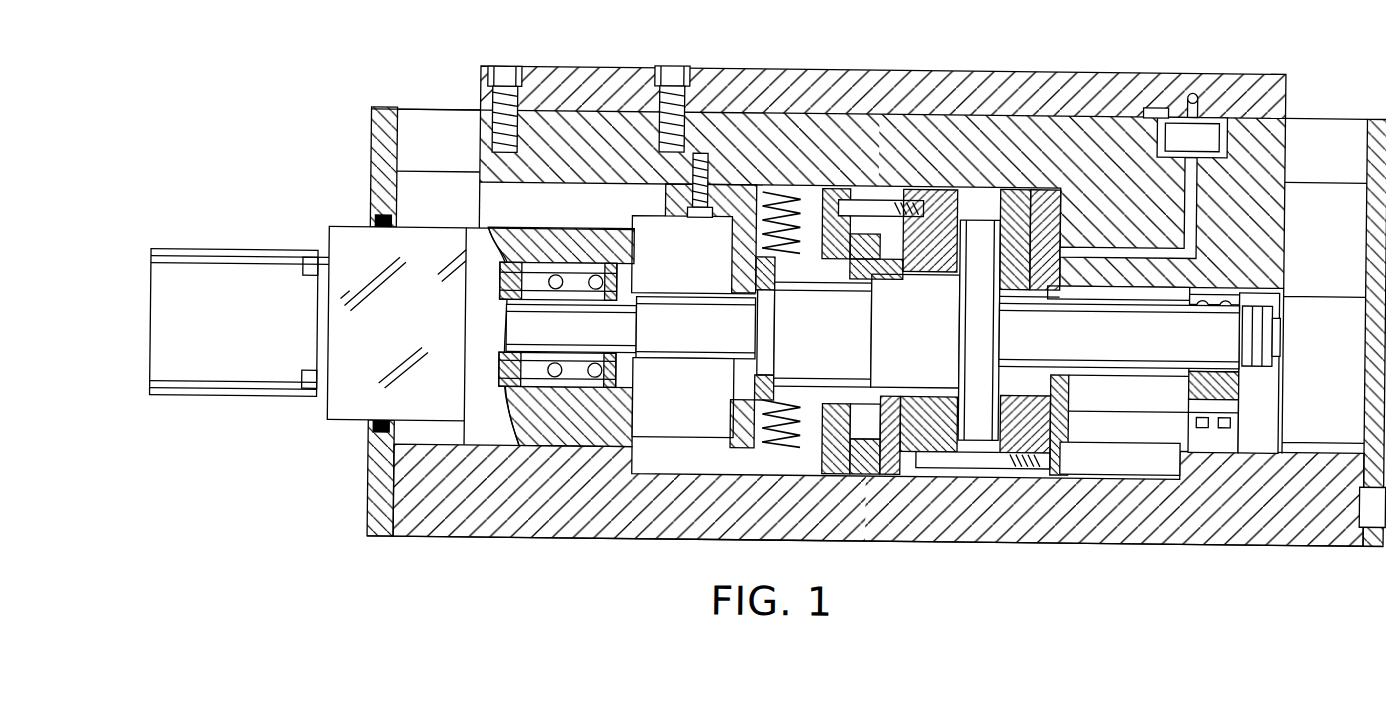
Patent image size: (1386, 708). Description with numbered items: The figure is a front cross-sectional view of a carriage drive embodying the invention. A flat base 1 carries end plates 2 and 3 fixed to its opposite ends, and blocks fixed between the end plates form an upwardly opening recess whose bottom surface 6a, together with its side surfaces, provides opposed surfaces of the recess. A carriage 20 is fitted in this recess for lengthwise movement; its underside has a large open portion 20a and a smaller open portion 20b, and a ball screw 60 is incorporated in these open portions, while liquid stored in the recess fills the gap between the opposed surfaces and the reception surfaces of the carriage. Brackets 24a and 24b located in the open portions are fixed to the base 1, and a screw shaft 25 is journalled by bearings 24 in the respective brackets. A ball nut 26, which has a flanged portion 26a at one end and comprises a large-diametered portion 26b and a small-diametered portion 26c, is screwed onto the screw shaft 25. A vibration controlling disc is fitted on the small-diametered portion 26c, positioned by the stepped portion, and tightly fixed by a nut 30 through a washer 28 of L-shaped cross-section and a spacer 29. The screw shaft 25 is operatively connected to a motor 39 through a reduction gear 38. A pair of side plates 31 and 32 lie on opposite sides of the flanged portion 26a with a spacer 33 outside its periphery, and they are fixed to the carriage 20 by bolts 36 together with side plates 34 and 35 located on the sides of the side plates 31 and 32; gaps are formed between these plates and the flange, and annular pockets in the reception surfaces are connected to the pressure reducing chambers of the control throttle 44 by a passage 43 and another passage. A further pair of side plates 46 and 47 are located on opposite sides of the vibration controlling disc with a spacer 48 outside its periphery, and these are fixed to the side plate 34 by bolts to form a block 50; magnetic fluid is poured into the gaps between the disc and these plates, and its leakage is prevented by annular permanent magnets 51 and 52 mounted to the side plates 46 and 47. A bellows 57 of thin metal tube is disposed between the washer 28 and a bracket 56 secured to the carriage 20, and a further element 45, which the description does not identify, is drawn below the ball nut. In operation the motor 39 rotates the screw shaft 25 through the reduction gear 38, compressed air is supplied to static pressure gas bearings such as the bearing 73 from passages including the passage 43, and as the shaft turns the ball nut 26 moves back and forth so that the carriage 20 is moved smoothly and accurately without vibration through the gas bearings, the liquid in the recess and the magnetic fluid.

The flat base 1 is at (996, 535).
The end plate 2 is at (373, 473).
The end plate 3 is at (1374, 114).
The bottom surface 6a is at (1128, 470).
The carriage 20 is at (778, 153).
The large open portion 20a is at (577, 186).
The smaller open portion 20b is at (1172, 283).
The bearings 24 is at (612, 386).
The bracket 24a is at (555, 440).
The bracket 24b is at (1275, 423).
The screw shaft 25 is at (1085, 340).
The ball nut 26 is at (764, 333).
The flanged portion 26a is at (990, 330).
The large-diametered portion 26b is at (905, 328).
The small-diametered portion 26c is at (810, 329).
The washer 28 is at (826, 190).
The spacer 29 is at (758, 268).
The nut 30 is at (758, 388).
The side plate 31 is at (944, 192).
The side plate 32 is at (1022, 192).
The spacer 33 is at (978, 200).
The side plate 34 is at (938, 470).
The side plate 35 is at (1063, 212).
The bolts 36 is at (1002, 470).
The reduction gear 38 is at (385, 329).
The motor 39 is at (218, 328).
The passage 43 is at (1120, 245).
The control throttle 44 is at (1218, 118).
The spring 45 is at (836, 440).
The side plate 46 is at (836, 472).
The side plate 47 is at (897, 472).
The spacer 48 is at (868, 472).
The block 50 is at (965, 162).
The annular permanent magnet 51 is at (840, 402).
The annular permanent magnet 52 is at (895, 400).
The bracket 56 is at (680, 218).
The bellows 57 is at (779, 222).
The ball screw 60 is at (798, 474).
The static pressure gas bearing 73 is at (1060, 444).